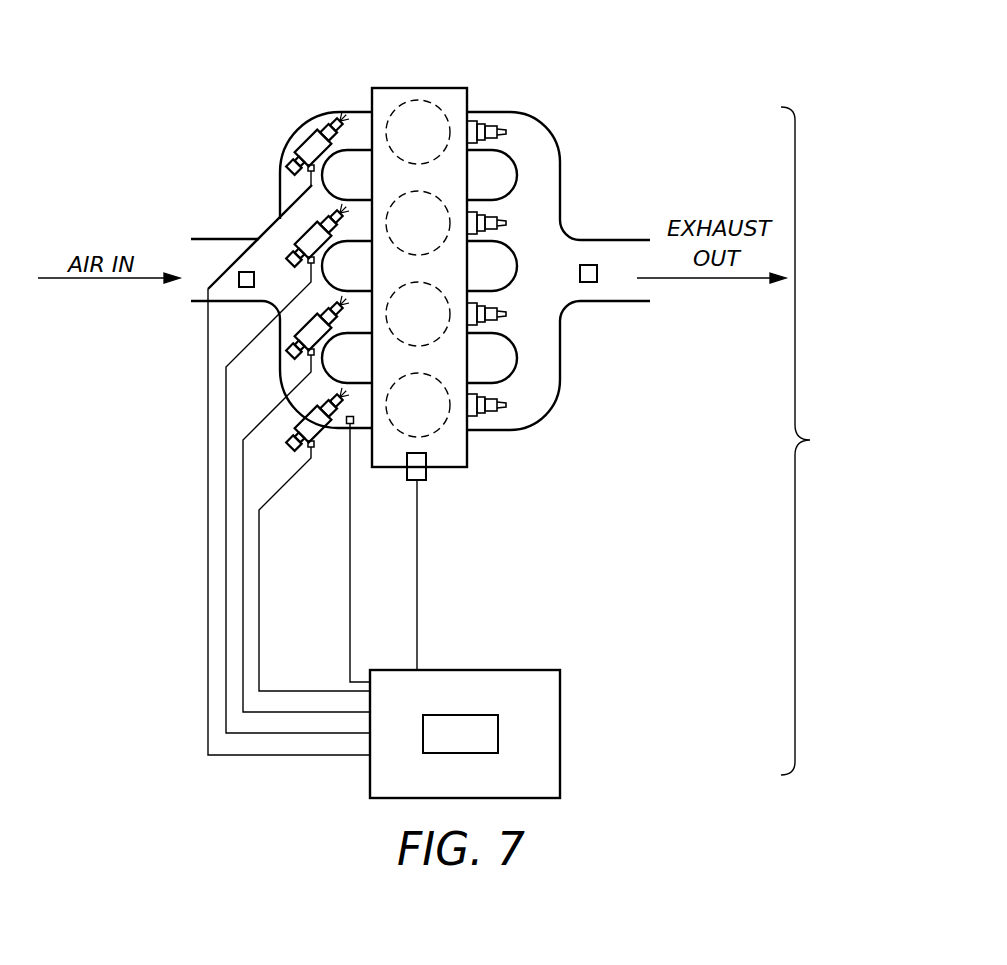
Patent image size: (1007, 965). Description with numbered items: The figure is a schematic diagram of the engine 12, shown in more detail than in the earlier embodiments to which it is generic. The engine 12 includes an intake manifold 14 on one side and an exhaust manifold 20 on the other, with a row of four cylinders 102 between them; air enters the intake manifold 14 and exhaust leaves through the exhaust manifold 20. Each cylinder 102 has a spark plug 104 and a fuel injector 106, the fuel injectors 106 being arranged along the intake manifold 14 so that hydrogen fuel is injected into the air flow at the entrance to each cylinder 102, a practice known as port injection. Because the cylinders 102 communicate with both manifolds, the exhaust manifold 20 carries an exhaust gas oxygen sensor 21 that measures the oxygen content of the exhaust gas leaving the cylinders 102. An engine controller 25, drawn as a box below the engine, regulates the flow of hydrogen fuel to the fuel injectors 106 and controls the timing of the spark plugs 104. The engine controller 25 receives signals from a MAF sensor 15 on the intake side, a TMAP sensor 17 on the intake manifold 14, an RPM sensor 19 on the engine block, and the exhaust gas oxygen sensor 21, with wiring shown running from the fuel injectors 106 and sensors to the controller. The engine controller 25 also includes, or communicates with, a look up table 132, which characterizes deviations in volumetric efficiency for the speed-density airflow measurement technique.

The engine 12 is at (822, 441).
The intake manifold 14 is at (230, 239).
The MAF sensor 15 is at (246, 288).
The TMAP sensor 17 is at (347, 428).
The RPM sensor 19 is at (428, 480).
The exhaust manifold 20 is at (550, 394).
The exhaust gas oxygen sensor 21 is at (598, 283).
The engine controller 25 is at (495, 702).
The cylinder 102 is at (428, 100).
The spark plug 104 is at (500, 130).
The fuel injector 106 is at (312, 227).
The look up table 132 is at (460, 734).